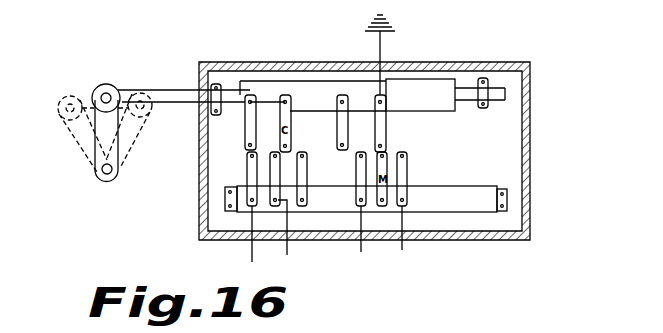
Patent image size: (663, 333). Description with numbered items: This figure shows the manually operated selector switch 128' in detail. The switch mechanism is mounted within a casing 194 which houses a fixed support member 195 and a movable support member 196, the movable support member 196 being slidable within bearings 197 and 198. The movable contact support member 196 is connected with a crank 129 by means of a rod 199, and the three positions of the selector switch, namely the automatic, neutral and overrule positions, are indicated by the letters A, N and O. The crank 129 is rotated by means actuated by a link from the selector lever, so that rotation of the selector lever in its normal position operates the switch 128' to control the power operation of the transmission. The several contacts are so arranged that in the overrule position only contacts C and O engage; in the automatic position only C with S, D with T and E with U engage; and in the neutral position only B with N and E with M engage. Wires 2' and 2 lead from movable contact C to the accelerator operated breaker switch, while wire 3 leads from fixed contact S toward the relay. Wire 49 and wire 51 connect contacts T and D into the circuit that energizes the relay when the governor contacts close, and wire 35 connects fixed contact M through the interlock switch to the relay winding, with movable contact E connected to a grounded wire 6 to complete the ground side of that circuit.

The wire 2 is at (256, 89).
The wire 2' is at (313, 74).
The wire 51 is at (343, 95).
The grounded wire 6 is at (383, 42).
The casing 194 is at (531, 121).
The movable support member 196 is at (428, 107).
The bearing 197 is at (481, 110).
The fixed support member 195 is at (468, 194).
The selector switch 128' is at (493, 263).
The wire 3 is at (287, 255).
The wire 49 is at (361, 252).
The wire 35 is at (402, 250).
The bearing 198 is at (217, 116).
The rod 199 is at (181, 103).
The crank 129 is at (97, 148).